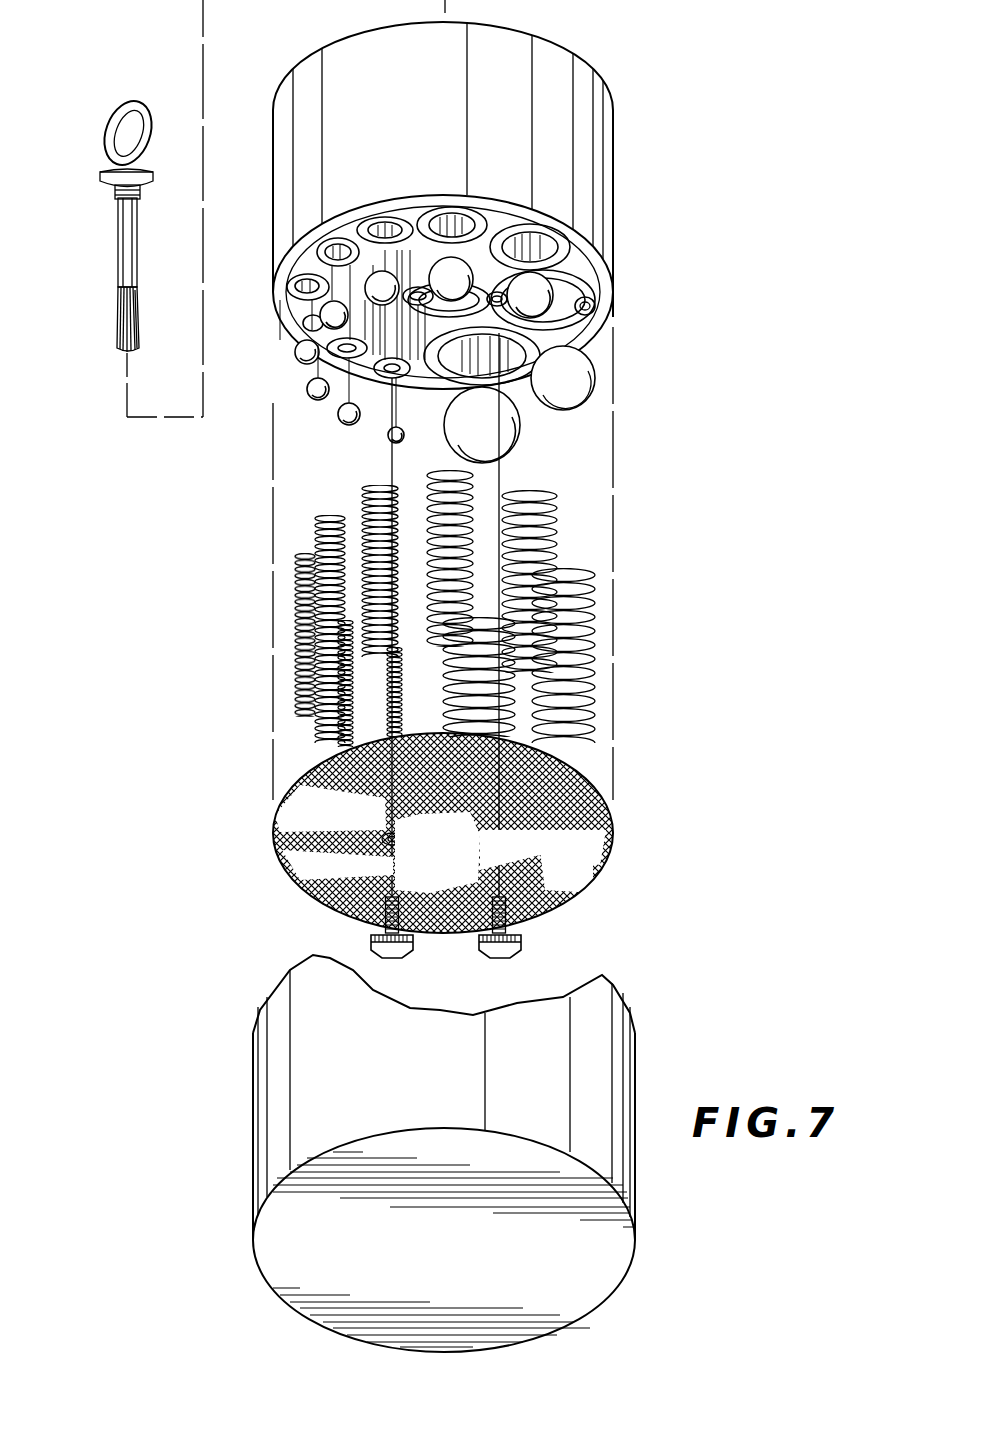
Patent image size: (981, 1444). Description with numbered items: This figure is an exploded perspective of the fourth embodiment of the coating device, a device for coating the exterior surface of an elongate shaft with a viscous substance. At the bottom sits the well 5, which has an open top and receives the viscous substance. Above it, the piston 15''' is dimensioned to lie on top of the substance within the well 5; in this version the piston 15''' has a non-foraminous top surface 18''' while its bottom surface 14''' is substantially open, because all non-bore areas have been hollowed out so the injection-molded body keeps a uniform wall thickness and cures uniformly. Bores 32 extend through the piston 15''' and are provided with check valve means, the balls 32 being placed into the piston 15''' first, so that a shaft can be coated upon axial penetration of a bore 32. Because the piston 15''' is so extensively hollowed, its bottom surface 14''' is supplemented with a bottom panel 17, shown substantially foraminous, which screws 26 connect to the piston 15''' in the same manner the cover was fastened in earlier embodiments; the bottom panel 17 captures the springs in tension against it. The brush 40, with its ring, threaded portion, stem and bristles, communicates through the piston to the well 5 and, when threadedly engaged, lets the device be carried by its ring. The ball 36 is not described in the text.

The brush 40 is at (125, 245).
The non-foraminous top surface 18''' is at (477, 66).
The piston 15''' is at (505, 411).
The bottom surface 14''' is at (501, 292).
The bore 32 is at (587, 310).
The ball 36 is at (580, 377).
The screws 26 is at (370, 953).
The bottom panel 17 is at (613, 830).
The well 5 is at (272, 1092).